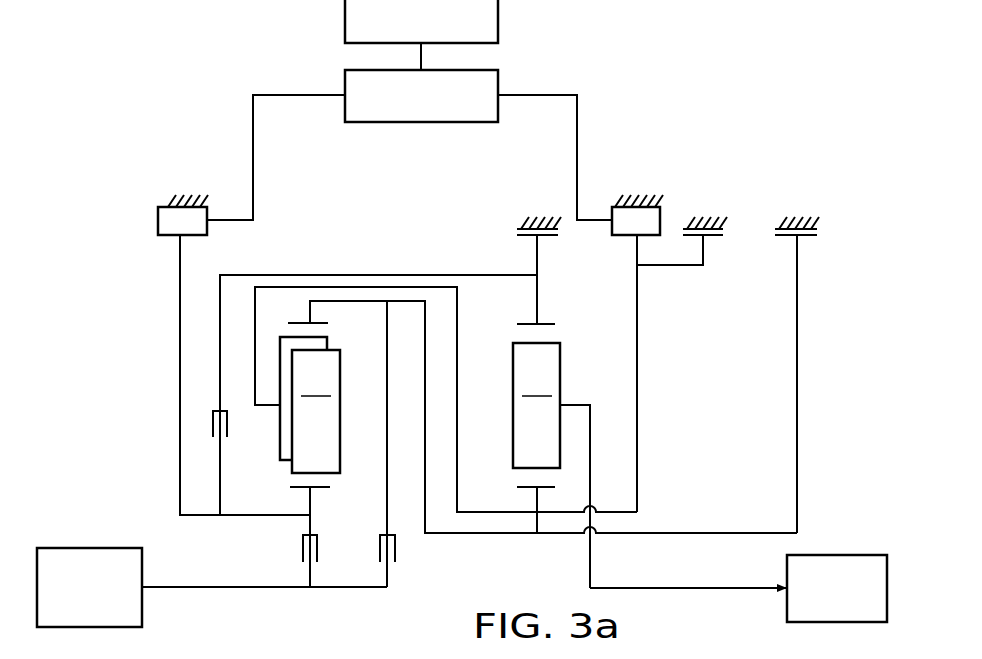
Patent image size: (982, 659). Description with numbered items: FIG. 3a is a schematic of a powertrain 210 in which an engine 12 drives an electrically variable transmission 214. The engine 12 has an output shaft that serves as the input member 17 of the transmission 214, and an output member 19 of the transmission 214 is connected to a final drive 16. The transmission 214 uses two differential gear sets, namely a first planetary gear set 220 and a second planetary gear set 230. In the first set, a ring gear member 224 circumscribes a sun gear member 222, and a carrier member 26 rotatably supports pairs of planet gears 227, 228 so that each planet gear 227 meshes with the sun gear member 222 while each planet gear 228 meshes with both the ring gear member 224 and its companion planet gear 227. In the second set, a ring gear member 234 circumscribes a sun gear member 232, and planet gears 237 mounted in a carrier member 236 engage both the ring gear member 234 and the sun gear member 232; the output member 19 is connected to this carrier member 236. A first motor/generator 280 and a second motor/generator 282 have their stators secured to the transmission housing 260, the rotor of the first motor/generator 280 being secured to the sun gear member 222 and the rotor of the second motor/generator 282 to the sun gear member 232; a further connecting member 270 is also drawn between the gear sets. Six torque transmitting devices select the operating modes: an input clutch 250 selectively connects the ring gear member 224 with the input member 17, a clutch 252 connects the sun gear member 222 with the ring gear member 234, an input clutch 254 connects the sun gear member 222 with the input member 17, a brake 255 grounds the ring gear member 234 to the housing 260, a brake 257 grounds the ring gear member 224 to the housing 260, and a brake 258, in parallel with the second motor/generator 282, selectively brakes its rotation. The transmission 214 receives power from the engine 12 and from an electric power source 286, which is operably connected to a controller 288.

The engine 12 is at (107, 531).
The final drive 16 is at (820, 543).
The input member 17 is at (178, 590).
The output member 19 is at (745, 592).
The interconnecting member 26 is at (268, 409).
The powertrain 210 is at (122, 352).
The electrically variable transmission 214 is at (153, 307).
The first planetary gear set 220 is at (298, 492).
The sun gear member 222 is at (320, 489).
The ring gear member 224 is at (302, 321).
The planet gear 227 is at (310, 405).
The planet gear 228 is at (281, 457).
The second planetary gear set 230 is at (523, 492).
The sun gear member 232 is at (548, 489).
The ring gear member 234 is at (525, 320).
The carrier member 236 is at (570, 398).
The planet gear 237 is at (536, 405).
The input clutch 250 is at (373, 563).
The clutch 252 is at (204, 432).
The input clutch 254 is at (297, 563).
The brake 255 is at (515, 228).
The brake 257 is at (821, 232).
The brake 258 is at (729, 232).
The transmission housing 260 is at (167, 198).
The interconnecting member 270 is at (362, 287).
The first motor/generator 280 is at (215, 204).
The second motor/generator 282 is at (612, 242).
The electric power source 286 is at (345, 22).
The controller 288 is at (345, 82).